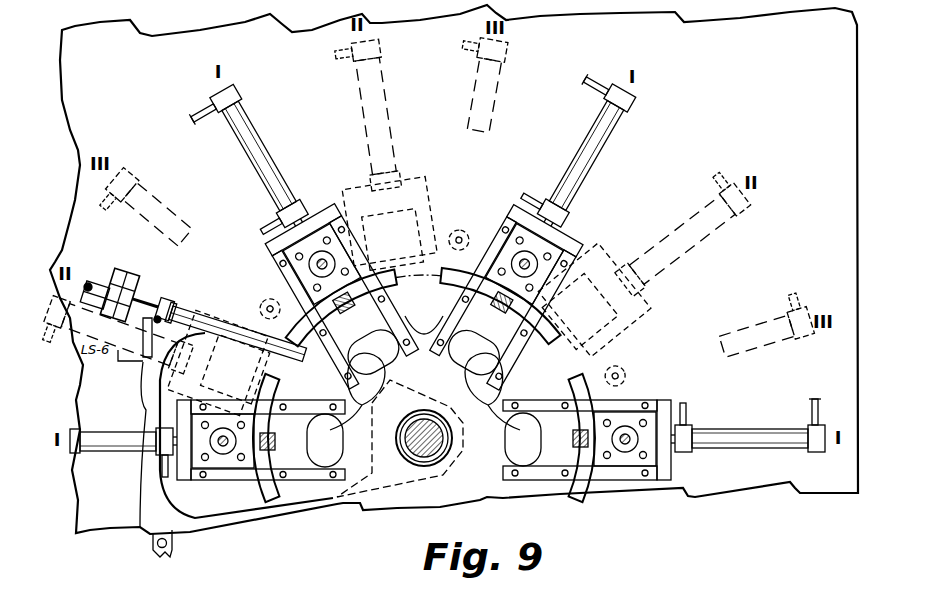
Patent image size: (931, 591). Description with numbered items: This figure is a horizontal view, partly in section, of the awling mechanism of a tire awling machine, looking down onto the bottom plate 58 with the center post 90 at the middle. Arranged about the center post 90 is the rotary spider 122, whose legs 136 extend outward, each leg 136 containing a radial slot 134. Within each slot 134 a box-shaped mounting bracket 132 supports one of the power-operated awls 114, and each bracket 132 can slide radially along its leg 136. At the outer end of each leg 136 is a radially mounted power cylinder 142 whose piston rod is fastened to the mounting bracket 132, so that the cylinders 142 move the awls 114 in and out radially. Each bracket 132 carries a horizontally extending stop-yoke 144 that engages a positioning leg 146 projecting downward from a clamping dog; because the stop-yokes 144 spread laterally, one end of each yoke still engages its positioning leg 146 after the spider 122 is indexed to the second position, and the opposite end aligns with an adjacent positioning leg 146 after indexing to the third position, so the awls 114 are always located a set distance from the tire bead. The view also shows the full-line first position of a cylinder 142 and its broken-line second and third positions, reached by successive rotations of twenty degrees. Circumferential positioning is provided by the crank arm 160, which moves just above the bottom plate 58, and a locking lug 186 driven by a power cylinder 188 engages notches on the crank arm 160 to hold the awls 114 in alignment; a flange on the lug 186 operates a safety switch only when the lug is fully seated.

The bottom plate 58 is at (827, 480).
The center post 90 is at (449, 461).
The power-operated awl 114 is at (518, 258).
The rotary spider 122 is at (400, 513).
The mounting bracket 132 is at (299, 222).
The radial slot 134 is at (372, 396).
The leg 136 is at (257, 258).
The power cylinder 142 is at (252, 152).
The stop-yoke 144 is at (448, 280).
The positioning leg 146 is at (352, 303).
The crank arm 160 is at (187, 308).
The locking lug 186 is at (150, 292).
The power cylinder 188 is at (87, 278).